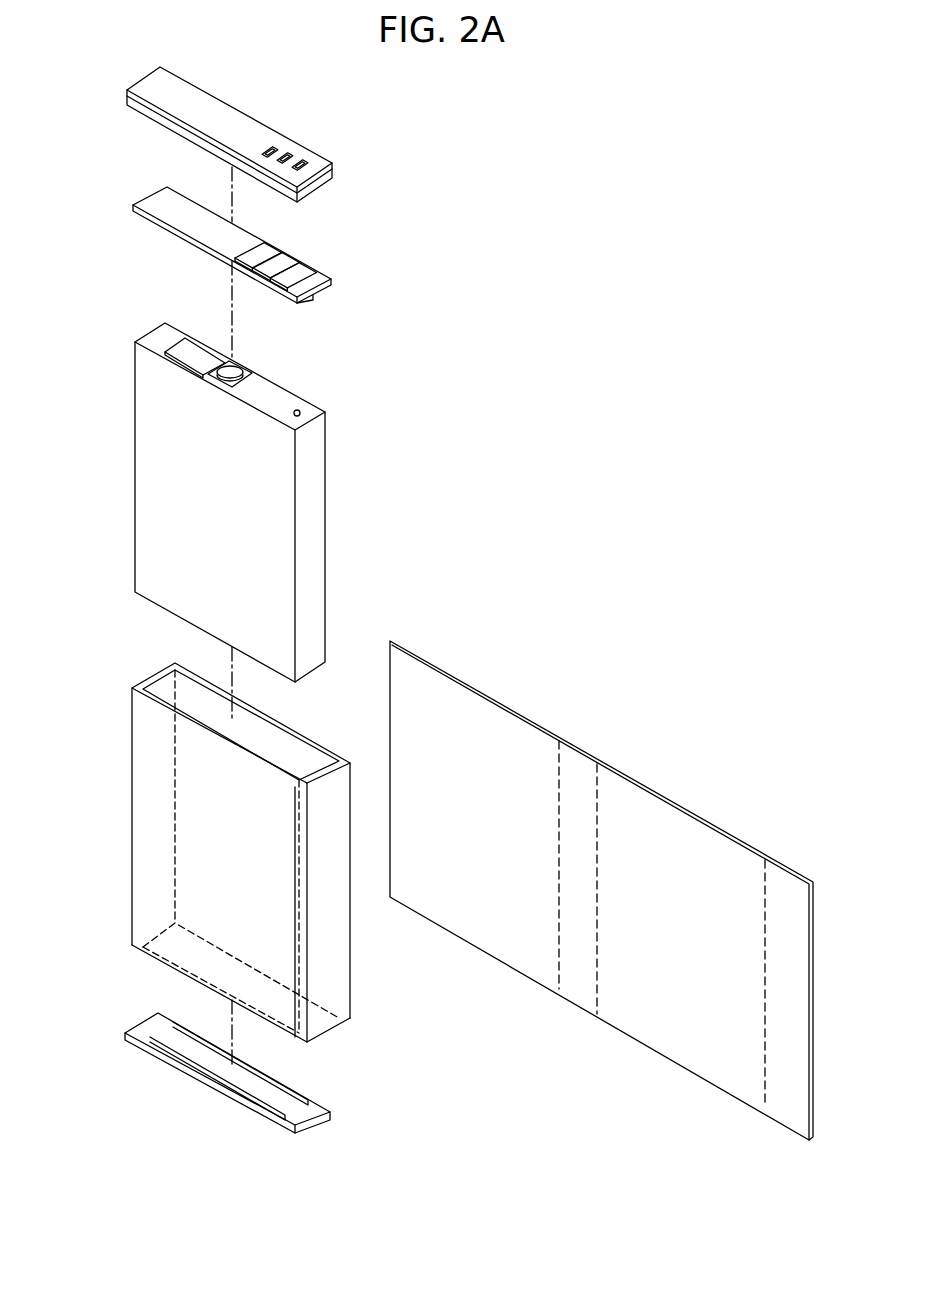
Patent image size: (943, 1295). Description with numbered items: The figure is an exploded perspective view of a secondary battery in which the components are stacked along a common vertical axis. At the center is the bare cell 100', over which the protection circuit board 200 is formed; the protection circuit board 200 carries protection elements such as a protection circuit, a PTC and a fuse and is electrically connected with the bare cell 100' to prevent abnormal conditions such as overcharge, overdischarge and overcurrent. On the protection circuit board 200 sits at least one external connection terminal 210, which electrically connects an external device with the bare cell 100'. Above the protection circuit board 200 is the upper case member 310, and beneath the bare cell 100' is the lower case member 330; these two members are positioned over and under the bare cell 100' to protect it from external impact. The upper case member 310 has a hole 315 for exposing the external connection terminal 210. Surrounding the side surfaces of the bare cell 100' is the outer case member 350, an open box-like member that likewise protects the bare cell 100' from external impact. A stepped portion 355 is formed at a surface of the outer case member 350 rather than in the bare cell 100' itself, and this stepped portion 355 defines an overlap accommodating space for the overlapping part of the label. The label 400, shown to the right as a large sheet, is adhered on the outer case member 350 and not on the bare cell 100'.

The upper case member 310 is at (148, 85).
The hole 315 is at (268, 149).
The protection circuit board 200 is at (160, 202).
The external connection terminal 210 is at (302, 266).
The bare cell 100' is at (193, 502).
The outer case member 350 is at (153, 852).
The stepped portion 355 is at (305, 953).
The lower case member 330 is at (157, 1027).
The label 400 is at (676, 822).